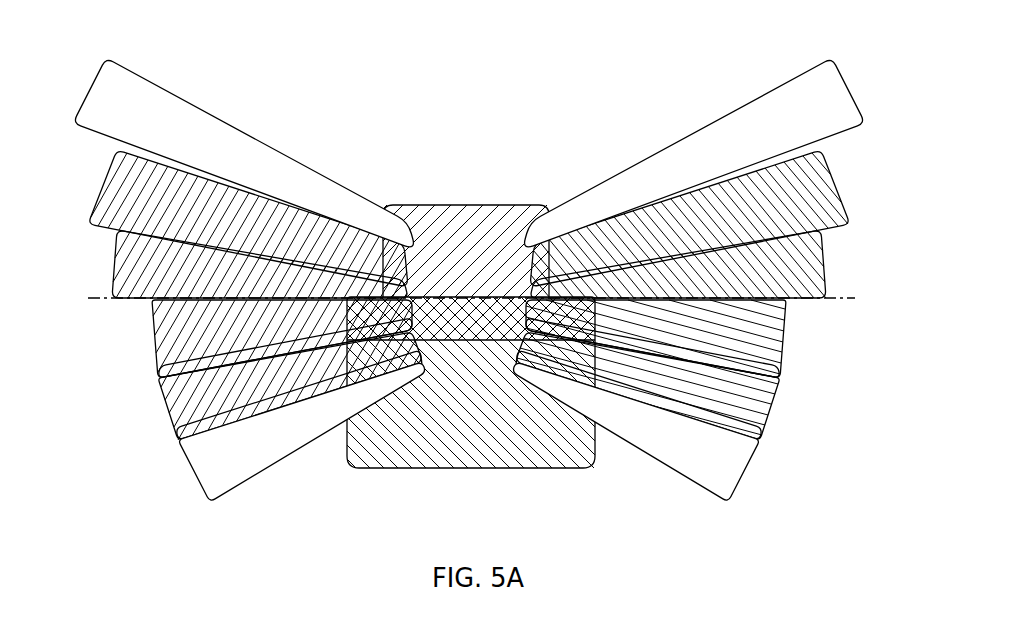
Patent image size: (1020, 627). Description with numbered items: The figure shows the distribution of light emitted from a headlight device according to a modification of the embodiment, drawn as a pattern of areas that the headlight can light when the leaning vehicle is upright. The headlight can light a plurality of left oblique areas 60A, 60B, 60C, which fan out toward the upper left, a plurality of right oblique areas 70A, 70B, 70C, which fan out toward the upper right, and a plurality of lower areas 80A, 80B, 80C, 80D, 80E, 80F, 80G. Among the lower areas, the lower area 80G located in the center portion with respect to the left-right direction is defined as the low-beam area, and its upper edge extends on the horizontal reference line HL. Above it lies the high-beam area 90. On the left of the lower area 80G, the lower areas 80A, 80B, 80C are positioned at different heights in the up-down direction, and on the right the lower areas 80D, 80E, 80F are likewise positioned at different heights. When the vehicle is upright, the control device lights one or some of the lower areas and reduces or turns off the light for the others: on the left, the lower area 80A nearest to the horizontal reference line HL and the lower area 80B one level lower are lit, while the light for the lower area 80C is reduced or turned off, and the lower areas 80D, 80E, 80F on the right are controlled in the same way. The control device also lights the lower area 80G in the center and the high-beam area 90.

The left oblique area 60A is at (110, 251).
The left oblique area 60B is at (100, 182).
The left oblique area 60C is at (90, 92).
The right oblique area 70A is at (830, 257).
The right oblique area 70B is at (840, 182).
The right oblique area 70C is at (848, 92).
The lower area 80A is at (152, 338).
The lower area 80B is at (160, 403).
The lower area 80C is at (184, 470).
The lower area 80D is at (787, 338).
The lower area 80E is at (778, 400).
The lower area 80F is at (758, 470).
The lower area 80G is at (476, 450).
The high-beam area 90 is at (456, 215).
The horizontal reference line HL is at (459, 300).